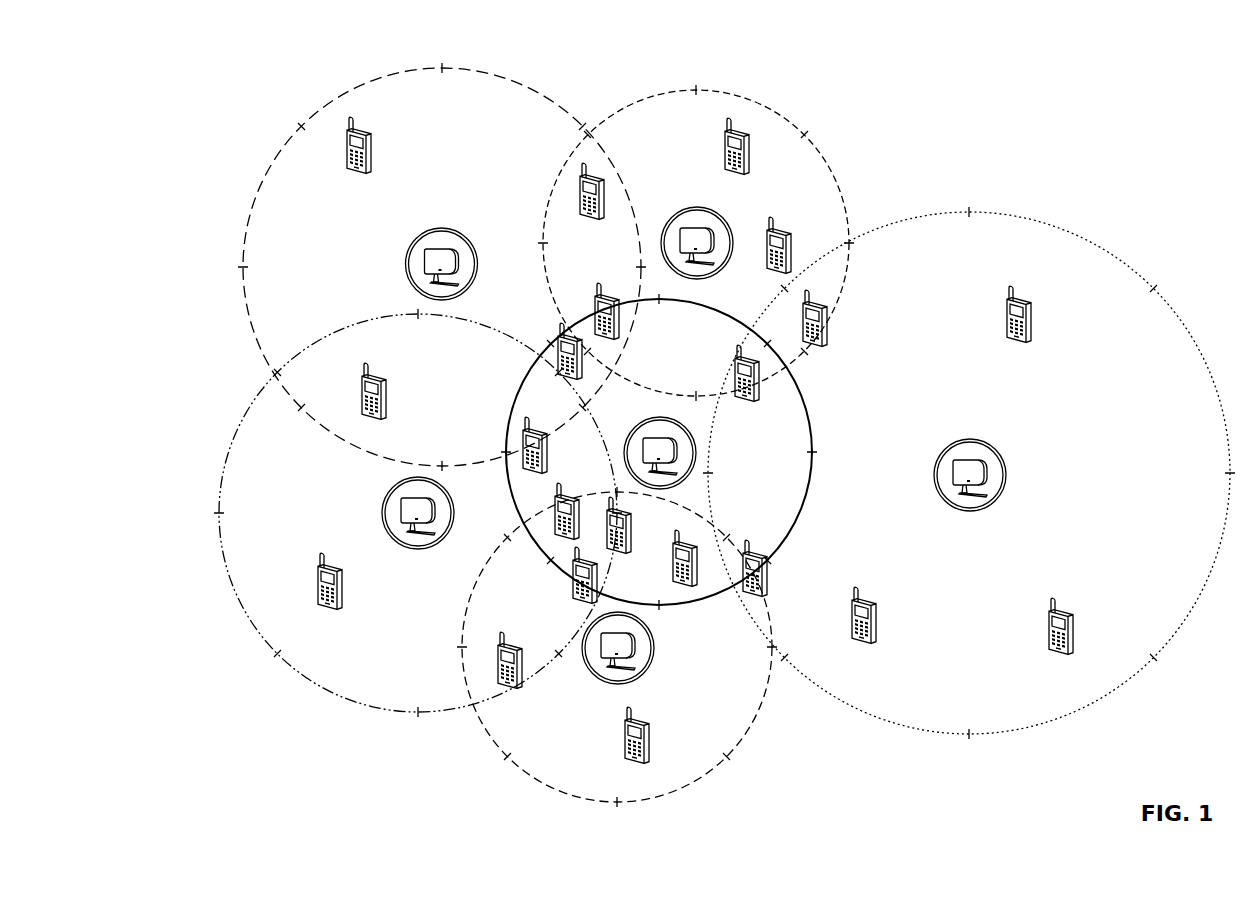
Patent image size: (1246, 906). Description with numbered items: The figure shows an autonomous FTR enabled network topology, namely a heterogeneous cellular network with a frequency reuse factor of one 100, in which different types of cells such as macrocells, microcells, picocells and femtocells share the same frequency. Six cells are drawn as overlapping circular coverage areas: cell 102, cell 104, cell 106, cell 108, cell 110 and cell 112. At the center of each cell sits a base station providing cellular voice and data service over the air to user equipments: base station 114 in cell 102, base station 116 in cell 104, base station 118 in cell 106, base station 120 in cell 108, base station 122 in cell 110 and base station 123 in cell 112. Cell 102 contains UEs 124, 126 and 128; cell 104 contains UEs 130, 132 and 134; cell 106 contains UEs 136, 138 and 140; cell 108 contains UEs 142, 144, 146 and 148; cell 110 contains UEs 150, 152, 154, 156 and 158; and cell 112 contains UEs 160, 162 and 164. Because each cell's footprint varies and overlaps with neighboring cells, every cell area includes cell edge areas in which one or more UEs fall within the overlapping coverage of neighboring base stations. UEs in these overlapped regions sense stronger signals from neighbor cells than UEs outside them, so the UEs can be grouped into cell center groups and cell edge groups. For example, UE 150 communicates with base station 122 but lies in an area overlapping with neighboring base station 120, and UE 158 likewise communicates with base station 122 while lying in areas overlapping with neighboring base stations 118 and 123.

The heterogeneous cellular network with a frequency reuse factor of one 100 is at (1034, 97).
The cell 102 is at (327, 60).
The cell 104 is at (168, 473).
The cell 106 is at (745, 760).
The cell 108 is at (745, 78).
The cell 110 is at (1056, 741).
The cell 112 is at (763, 430).
The base station 114 is at (422, 221).
The base station 116 is at (418, 576).
The base station 118 is at (658, 670).
The base station 120 is at (671, 203).
The base station 122 is at (979, 436).
The base station 123 is at (608, 415).
The UE 124 is at (321, 200).
The UE 126 is at (398, 421).
The UE 128 is at (576, 246).
The UE 130 is at (344, 620).
The UE 132 is at (524, 415).
The UE 134 is at (528, 605).
The UE 136 is at (476, 628).
The UE 138 is at (658, 756).
The UE 140 is at (636, 526).
The UE 142 is at (758, 155).
The UE 144 is at (576, 276).
The UE 146 is at (788, 228).
The UE 148 is at (696, 346).
The UE 150 is at (833, 345).
The UE 152 is at (958, 314).
The UE 154 is at (1001, 635).
The UE 156 is at (886, 630).
The UE 158 is at (743, 531).
The UE 160 is at (513, 323).
The UE 162 is at (633, 596).
The UE 164 is at (558, 483).